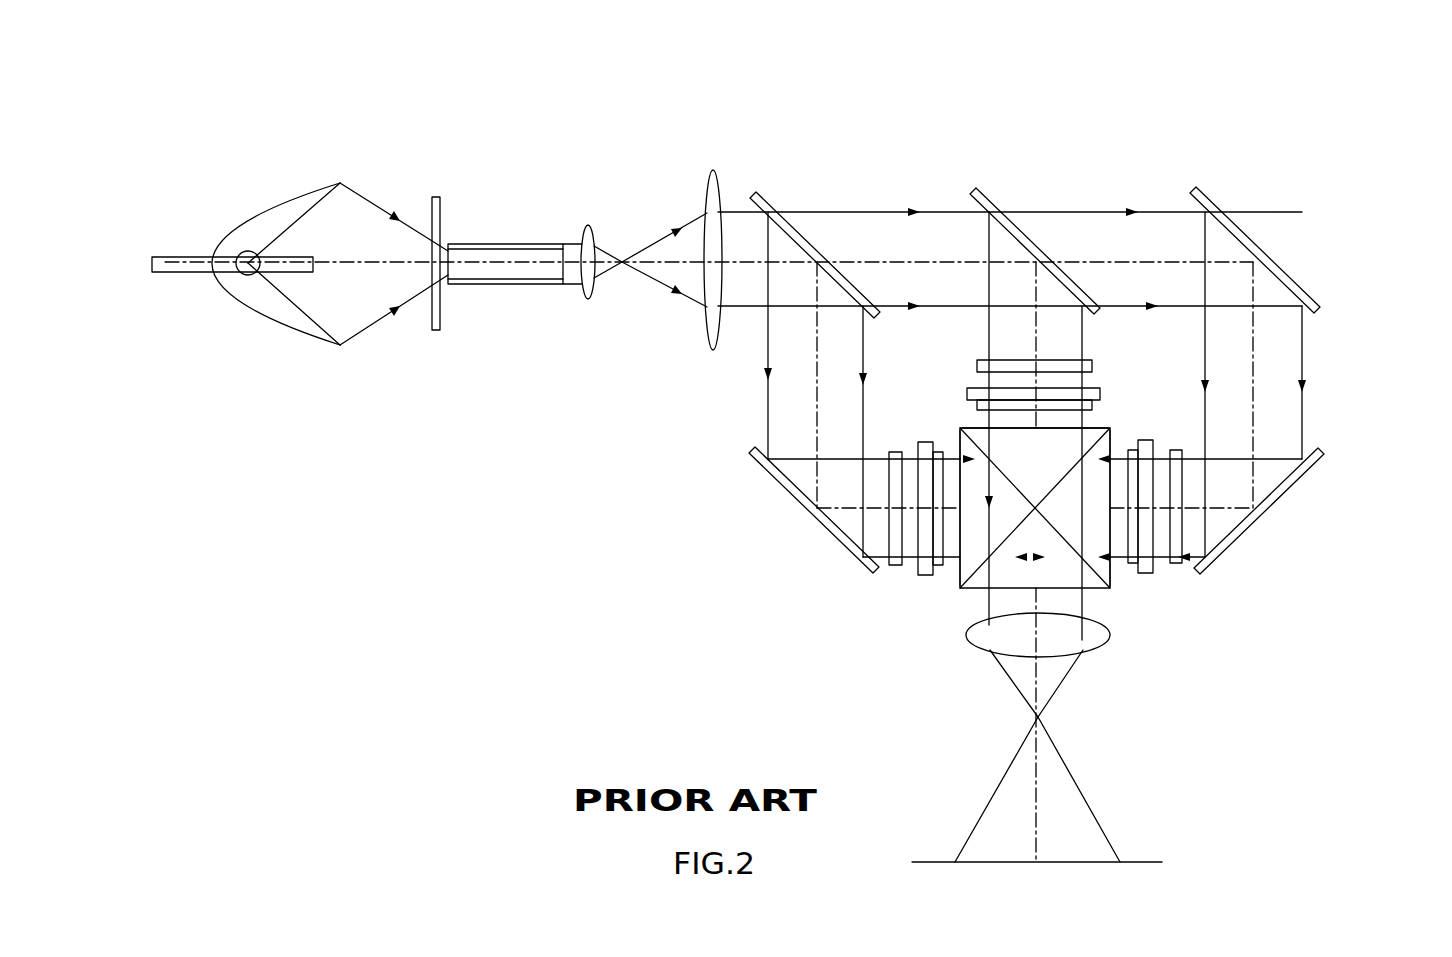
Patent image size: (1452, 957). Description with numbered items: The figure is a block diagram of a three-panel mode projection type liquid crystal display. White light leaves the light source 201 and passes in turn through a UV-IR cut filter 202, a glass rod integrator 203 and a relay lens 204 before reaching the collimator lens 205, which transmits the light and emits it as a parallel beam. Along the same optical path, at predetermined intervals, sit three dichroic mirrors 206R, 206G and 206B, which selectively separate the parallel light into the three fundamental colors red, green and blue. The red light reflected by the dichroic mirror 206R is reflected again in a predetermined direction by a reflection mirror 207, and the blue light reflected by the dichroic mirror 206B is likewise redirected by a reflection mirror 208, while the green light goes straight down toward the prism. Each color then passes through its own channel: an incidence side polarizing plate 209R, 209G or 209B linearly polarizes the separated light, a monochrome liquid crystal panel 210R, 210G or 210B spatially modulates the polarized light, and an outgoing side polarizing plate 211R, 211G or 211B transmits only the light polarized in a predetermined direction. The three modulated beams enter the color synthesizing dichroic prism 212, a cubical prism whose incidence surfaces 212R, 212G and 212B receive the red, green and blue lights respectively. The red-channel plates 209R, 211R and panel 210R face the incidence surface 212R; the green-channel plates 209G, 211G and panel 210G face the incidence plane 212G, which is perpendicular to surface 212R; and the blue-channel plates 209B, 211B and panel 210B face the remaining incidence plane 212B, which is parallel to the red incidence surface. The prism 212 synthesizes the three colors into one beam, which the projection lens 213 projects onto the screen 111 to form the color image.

The light source 201 is at (285, 191).
The UV-IR cut filter 202 is at (437, 195).
The glass rod integrator 203 is at (505, 243).
The relay lens 204 is at (587, 225).
The collimator lens 205 is at (712, 340).
The dichroic mirror 206R is at (815, 222).
The dichroic mirror 206G is at (1037, 230).
The dichroic mirror 206B is at (1282, 265).
The reflection mirror 207 is at (789, 501).
The reflection mirror 208 is at (1247, 530).
The incidence side polarizing plate 209R is at (895, 567).
The monochrome liquid crystal panel 210R is at (925, 577).
The outgoing side polarizing plate 211R is at (938, 567).
The incidence side polarizing plate 209G is at (977, 366).
The monochrome liquid crystal panel 210G is at (967, 394).
The outgoing side polarizing plate 211G is at (977, 406).
The incidence side polarizing plate 209B is at (1176, 565).
The monochrome liquid crystal panel 210B is at (1148, 576).
The outgoing side polarizing plate 211B is at (1133, 565).
The color synthesizing dichroic prism 212 is at (1128, 413).
The incidence surface 212R is at (960, 430).
The incidence surface 212G is at (1108, 435).
The incidence surface 212B is at (1110, 435).
The projection lens 213 is at (980, 650).
The screen 111 is at (924, 860).